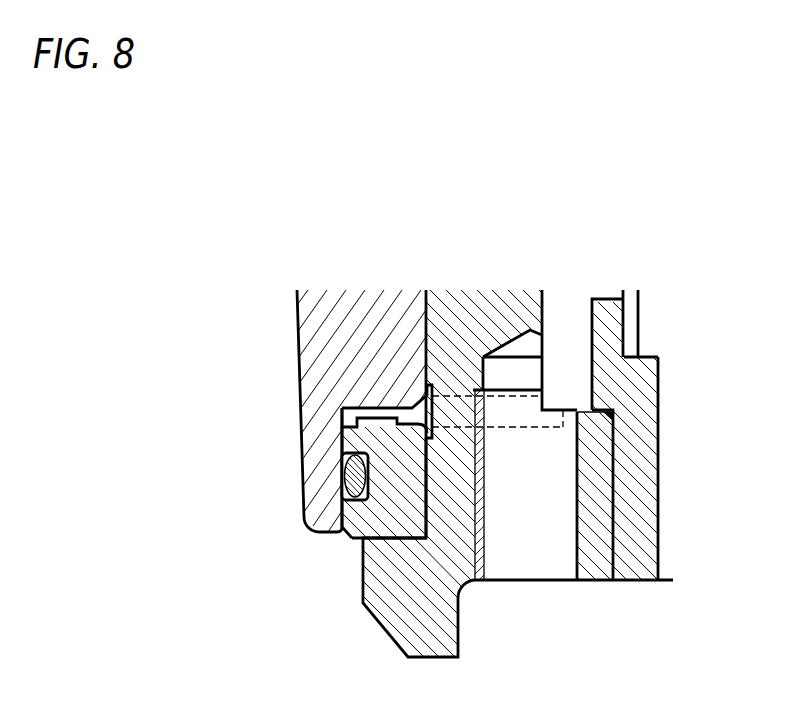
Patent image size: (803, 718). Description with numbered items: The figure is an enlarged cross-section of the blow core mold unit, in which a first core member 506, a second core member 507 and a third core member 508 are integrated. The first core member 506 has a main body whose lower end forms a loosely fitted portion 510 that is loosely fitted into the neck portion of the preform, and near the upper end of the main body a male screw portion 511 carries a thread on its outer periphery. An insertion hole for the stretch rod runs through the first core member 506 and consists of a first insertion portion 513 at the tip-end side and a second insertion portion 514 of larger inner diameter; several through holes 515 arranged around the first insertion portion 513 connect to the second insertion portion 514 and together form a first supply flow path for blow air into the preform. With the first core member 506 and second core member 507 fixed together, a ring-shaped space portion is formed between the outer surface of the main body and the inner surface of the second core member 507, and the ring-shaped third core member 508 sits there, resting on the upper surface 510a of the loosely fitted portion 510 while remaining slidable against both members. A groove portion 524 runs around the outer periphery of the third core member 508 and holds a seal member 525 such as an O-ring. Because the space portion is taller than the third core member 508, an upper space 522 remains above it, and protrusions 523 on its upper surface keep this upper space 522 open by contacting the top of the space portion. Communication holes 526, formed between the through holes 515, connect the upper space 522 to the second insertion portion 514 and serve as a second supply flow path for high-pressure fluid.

The first core member 506 is at (462, 305).
The second core member 507 is at (310, 350).
The third core member 508 is at (373, 517).
The loosely fitted portion 510 is at (387, 620).
The upper surface of the loosely fitted portion 510a is at (403, 535).
The male screw portion 511 is at (643, 435).
The first insertion portion 513 is at (623, 547).
The second insertion portion 514 is at (562, 318).
The through hole 515 is at (527, 548).
The upper space 522 is at (342, 408).
The protrusion 523 is at (397, 525).
The groove portion 524 is at (341, 457).
The seal member 525 is at (338, 482).
The communication hole 526 is at (500, 407).